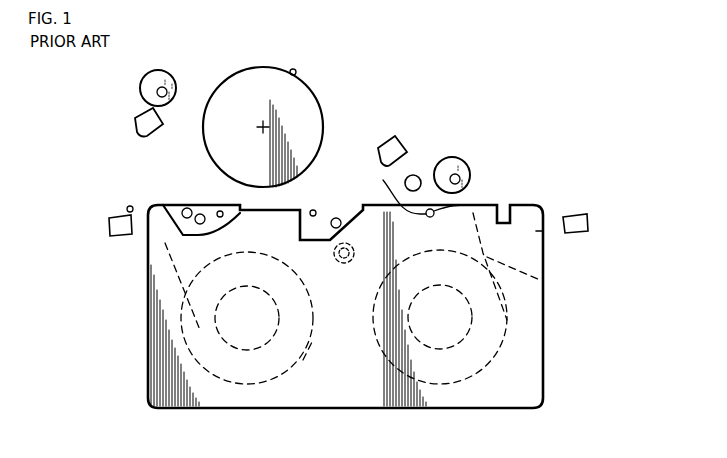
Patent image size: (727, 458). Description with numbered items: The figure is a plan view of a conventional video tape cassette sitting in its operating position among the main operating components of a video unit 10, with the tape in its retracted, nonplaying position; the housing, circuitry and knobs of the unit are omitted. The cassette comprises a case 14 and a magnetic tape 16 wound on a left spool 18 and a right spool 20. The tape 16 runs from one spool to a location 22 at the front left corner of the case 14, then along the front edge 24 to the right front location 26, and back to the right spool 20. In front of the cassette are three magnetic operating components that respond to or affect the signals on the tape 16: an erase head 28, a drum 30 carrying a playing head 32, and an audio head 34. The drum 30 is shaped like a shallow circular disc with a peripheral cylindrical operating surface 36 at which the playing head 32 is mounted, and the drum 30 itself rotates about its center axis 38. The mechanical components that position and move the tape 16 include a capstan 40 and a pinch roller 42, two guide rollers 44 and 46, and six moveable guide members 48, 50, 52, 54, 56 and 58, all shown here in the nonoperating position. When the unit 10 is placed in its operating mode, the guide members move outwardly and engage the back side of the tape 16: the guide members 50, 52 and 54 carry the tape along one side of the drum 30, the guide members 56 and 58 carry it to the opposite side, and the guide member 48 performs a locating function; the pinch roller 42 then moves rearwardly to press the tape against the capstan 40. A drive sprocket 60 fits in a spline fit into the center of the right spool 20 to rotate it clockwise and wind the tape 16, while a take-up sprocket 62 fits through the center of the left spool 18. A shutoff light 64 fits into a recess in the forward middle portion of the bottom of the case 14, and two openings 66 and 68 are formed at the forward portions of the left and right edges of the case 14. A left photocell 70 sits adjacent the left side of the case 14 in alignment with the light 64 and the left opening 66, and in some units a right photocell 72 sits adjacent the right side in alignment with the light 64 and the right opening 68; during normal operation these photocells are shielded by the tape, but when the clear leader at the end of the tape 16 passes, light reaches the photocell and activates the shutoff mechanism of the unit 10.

The video unit 10 is at (407, 105).
The case 14 is at (478, 408).
The magnetic tape 16 is at (150, 250).
The left spool 18 is at (286, 363).
The right spool 20 is at (426, 359).
The front left corner location 22 is at (170, 203).
The front edge 24 is at (305, 208).
The right front location 26 is at (470, 205).
The erase head 28 is at (136, 122).
The drum 30 is at (268, 73).
The playing head 32 is at (296, 72).
The audio head 34 is at (398, 142).
The peripheral operating surface 36 is at (320, 103).
The center axis 38 is at (262, 125).
The capstan 40 is at (402, 205).
The pinch roller 42 is at (470, 175).
The guide roller 44 is at (416, 176).
The guide roller 46 is at (140, 93).
The moveable guide member 48 is at (127, 208).
The moveable guide member 50 is at (185, 207).
The moveable guide member 52 is at (200, 213).
The moveable guide member 54 is at (222, 217).
The moveable guide member 56 is at (310, 213).
The moveable guide member 58 is at (334, 228).
The drive sprocket 60 is at (448, 336).
The take-up sprocket 62 is at (258, 341).
The shutoff light 64 is at (385, 236).
The left opening 66 is at (148, 238).
The right opening 68 is at (545, 232).
The left photocell 70 is at (108, 225).
The right photocell 72 is at (589, 223).